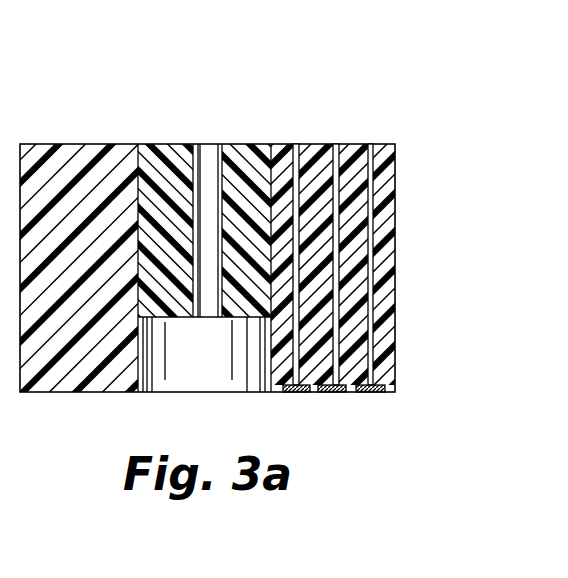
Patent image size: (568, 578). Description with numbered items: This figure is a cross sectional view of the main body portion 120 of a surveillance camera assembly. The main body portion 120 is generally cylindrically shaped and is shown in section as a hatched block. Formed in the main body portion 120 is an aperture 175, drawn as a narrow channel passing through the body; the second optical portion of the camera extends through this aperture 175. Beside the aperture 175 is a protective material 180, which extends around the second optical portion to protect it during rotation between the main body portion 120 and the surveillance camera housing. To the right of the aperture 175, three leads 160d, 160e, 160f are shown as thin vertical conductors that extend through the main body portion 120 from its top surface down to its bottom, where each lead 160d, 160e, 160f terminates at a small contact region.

The main body portion 120 is at (59, 136).
The aperture 175 is at (203, 145).
The protective material 180 is at (233, 145).
The lead 160d is at (296, 144).
The lead 160e is at (334, 144).
The lead 160f is at (370, 144).